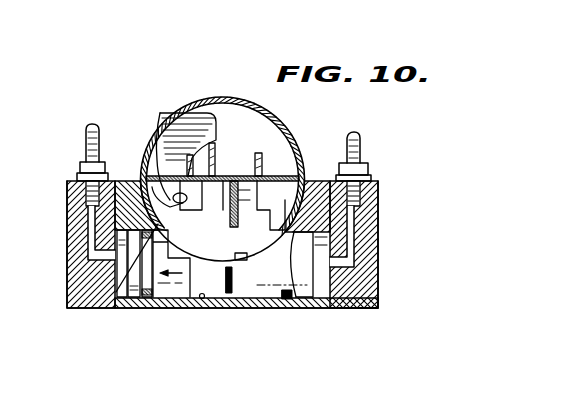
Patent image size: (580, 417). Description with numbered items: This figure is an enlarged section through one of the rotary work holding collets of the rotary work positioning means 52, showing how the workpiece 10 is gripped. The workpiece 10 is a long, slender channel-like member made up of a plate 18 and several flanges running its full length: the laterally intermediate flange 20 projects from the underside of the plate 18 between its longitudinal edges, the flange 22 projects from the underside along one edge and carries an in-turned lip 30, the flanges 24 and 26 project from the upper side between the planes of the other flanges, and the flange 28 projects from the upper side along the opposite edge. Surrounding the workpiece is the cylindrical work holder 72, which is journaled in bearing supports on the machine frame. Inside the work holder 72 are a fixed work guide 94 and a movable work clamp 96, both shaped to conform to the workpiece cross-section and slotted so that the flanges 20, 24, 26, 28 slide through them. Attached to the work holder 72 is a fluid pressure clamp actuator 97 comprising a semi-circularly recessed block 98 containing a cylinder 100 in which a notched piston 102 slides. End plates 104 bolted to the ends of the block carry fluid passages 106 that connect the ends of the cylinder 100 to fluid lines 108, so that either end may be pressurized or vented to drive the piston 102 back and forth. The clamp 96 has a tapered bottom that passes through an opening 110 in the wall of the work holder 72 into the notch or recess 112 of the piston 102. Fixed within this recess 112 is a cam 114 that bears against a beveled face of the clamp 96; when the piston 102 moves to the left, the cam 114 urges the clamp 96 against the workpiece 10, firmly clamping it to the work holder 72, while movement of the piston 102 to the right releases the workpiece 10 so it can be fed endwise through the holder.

The workpiece 10 is at (301, 130).
The plate 18 is at (268, 148).
The laterally intermediate flange 20 is at (230, 239).
The flange 22 is at (158, 138).
The flange 24 is at (196, 118).
The flange 26 is at (216, 144).
The flange 28 is at (263, 168).
The in-turned lip 30 is at (148, 178).
The rotary work positioning means 52 is at (52, 212).
The cylindrical work holder 72 is at (250, 97).
The fixed work guide 94 is at (198, 120).
The movable work clamp 96 is at (193, 246).
The fluid pressure clamp actuator 97 is at (285, 296).
The semi-circularly recessed block 98 is at (135, 300).
The cylinder 100 is at (167, 299).
The notched piston 102 is at (203, 298).
The end plates 104 is at (70, 283).
The fluid passages 106 is at (93, 233).
The fluid lines 108 is at (88, 132).
The opening 110 is at (88, 310).
The notch or recess 112 is at (268, 249).
The cam 114 is at (252, 285).